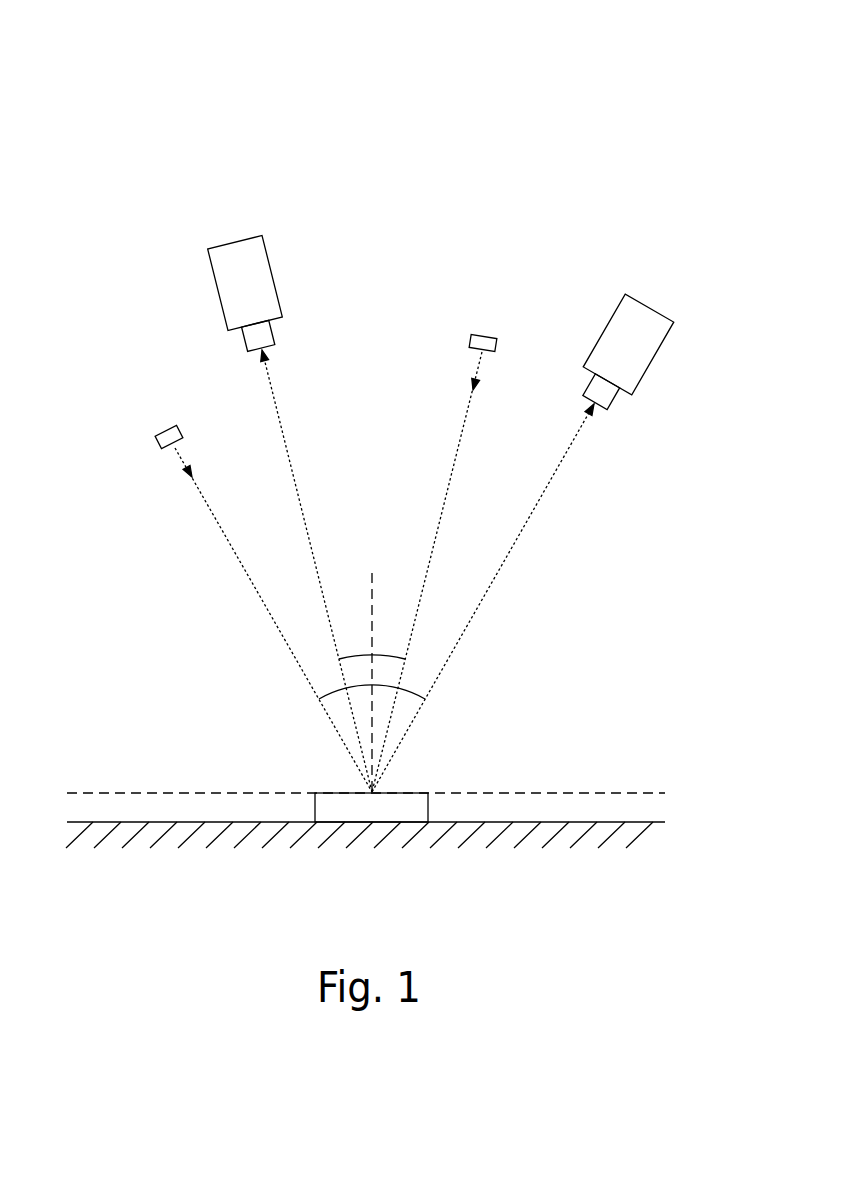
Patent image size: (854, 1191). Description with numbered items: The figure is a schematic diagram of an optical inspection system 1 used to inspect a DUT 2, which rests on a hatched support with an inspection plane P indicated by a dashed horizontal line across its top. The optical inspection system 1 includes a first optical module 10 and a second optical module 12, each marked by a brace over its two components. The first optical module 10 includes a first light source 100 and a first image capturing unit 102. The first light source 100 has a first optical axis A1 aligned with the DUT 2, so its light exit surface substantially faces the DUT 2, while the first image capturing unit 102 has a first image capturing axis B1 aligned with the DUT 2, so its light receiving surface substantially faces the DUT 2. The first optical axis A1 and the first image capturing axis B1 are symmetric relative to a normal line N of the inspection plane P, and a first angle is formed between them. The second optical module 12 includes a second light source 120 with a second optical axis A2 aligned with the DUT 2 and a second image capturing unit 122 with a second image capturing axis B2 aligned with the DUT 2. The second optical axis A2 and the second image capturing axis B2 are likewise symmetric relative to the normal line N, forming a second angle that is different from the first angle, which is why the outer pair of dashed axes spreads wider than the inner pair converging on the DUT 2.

The optical inspection system 1 is at (45, 42).
The first optical module 10 is at (137, 151).
The first light source 100 is at (470, 336).
The first image capturing unit 102 is at (235, 240).
The second optical module 12 is at (535, 151).
The second light source 120 is at (377, 301).
The second image capturing unit 122 is at (653, 307).
The DUT (device under test) 2 is at (428, 808).
The first optical axis A1 is at (463, 432).
The second optical axis A2 is at (228, 543).
The first image capturing axis B1 is at (282, 433).
The second image capturing axis B2 is at (515, 543).
The normal line N is at (369, 667).
The inspection plane P is at (610, 792).